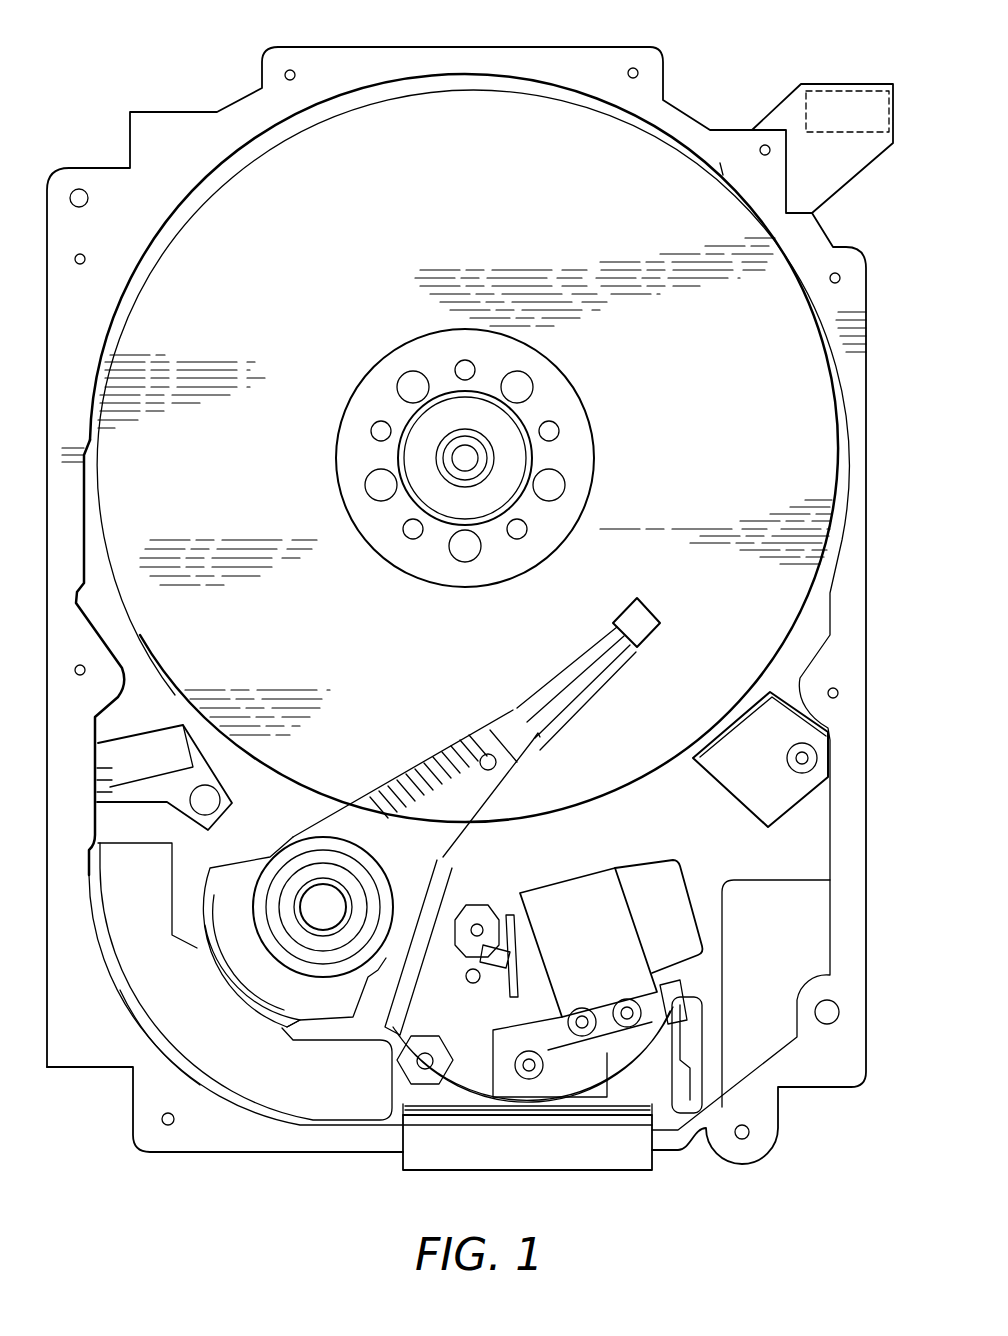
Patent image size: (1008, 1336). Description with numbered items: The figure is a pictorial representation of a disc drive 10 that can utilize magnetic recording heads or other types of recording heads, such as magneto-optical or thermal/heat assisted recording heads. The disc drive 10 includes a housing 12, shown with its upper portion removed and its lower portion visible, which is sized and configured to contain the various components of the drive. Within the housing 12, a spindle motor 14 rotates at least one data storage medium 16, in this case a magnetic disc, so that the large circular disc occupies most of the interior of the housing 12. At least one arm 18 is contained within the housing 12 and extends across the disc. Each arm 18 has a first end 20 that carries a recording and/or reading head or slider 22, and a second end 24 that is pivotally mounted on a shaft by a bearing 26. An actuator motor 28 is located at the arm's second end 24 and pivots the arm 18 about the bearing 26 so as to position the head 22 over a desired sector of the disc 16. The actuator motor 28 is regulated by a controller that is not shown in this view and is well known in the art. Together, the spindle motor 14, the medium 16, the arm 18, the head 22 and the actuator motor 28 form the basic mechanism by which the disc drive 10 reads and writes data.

The disc drive 10 is at (108, 98).
The housing 12 is at (616, 58).
The spindle motor 14 is at (438, 462).
The data storage medium 16 is at (374, 236).
The arm 18 is at (448, 777).
The first end 20 is at (577, 653).
The head 22 is at (640, 618).
The second end 24 is at (352, 842).
The bearing 26 is at (318, 897).
The actuator motor 28 is at (212, 1038).